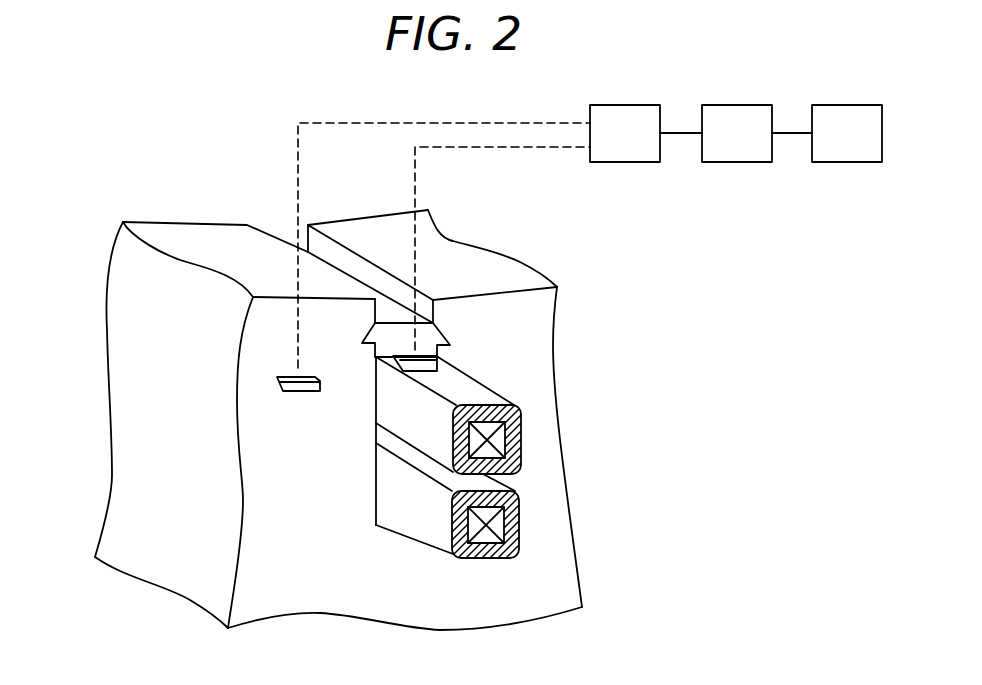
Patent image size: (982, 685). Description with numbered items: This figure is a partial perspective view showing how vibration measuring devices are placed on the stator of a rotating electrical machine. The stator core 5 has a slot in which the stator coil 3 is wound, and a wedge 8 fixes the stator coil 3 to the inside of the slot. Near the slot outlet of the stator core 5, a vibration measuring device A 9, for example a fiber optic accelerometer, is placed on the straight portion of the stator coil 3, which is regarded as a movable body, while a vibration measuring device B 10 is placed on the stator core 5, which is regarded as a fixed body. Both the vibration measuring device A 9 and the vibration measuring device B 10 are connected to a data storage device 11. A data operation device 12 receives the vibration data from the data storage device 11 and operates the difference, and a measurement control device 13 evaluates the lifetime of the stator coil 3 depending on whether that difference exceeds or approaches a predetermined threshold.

The stator coil 3 is at (387, 485).
The stator core 5 is at (120, 377).
The wedge 8 is at (437, 333).
The vibration measuring device A 9 is at (423, 367).
The vibration measuring device B 10 is at (300, 392).
The data storage device 11 is at (625, 162).
The data operation device 12 is at (735, 162).
The measurement control device 13 is at (847, 162).